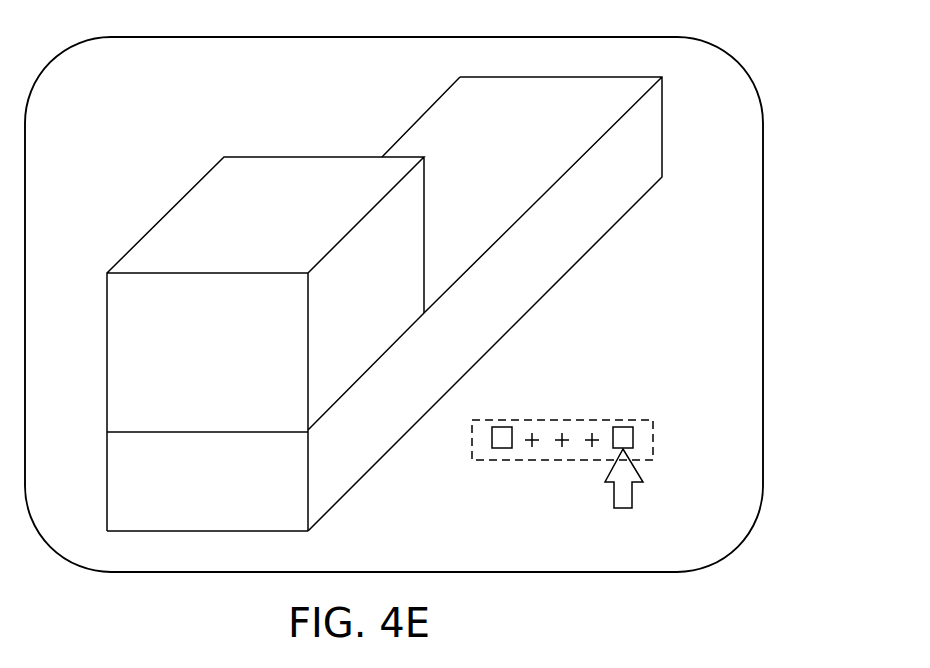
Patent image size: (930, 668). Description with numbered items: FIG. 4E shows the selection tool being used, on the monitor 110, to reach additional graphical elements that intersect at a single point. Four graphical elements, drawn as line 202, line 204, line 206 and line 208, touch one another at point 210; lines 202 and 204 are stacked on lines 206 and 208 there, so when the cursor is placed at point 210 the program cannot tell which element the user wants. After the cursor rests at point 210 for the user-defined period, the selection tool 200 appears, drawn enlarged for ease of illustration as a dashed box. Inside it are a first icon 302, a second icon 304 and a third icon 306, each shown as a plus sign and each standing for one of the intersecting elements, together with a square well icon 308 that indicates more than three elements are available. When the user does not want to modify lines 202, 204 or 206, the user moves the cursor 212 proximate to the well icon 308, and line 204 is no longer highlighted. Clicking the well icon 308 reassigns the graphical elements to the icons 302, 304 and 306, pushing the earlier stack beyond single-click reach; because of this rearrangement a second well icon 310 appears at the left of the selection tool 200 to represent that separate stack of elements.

The monitor 110 is at (520, 37).
The line 202 is at (482, 255).
The line 204 is at (308, 315).
The line 206 is at (217, 432).
The line 208 is at (307, 508).
The point 210 is at (308, 432).
The selection tool 200 is at (655, 445).
The first icon 302 is at (532, 445).
The second icon 304 is at (562, 435).
The third icon 306 is at (590, 435).
The well icon 308 is at (618, 450).
The well icon 310 is at (492, 438).
The cursor 212 is at (632, 495).